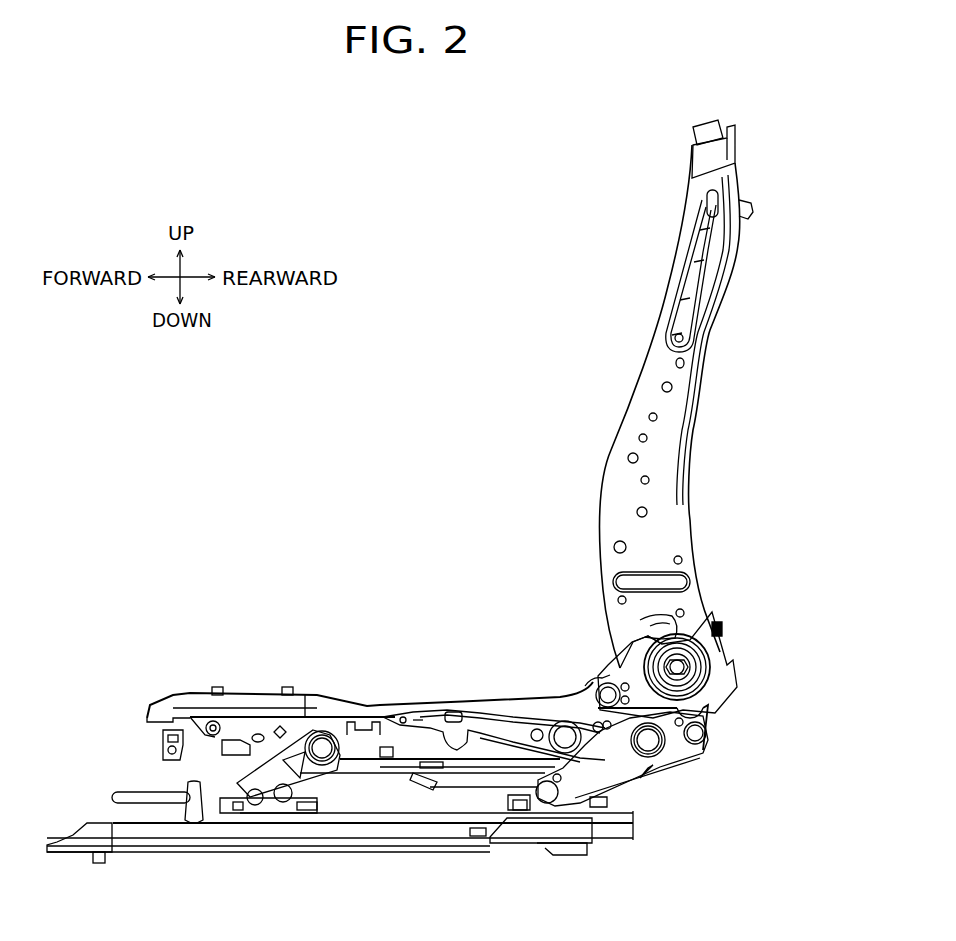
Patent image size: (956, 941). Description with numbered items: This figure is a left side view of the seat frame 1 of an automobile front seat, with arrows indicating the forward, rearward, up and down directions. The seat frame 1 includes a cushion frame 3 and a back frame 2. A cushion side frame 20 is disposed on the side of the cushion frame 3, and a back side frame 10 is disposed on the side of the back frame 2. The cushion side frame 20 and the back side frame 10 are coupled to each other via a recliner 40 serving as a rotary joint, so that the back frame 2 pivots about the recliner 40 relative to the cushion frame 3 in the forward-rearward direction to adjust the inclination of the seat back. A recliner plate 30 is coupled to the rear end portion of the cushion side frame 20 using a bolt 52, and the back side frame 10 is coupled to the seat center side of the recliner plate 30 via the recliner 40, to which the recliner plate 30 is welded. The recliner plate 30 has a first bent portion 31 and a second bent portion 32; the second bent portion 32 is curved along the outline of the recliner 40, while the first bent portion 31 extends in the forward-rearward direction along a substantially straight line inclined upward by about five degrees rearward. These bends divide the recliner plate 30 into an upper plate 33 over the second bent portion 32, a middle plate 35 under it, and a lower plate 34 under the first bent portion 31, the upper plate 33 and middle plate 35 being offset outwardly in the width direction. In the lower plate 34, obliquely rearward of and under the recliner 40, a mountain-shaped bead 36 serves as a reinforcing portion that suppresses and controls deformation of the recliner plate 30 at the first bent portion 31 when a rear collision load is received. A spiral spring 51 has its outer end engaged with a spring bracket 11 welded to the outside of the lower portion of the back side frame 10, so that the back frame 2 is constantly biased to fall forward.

The seat frame 1 is at (440, 575).
The back frame 2 is at (612, 418).
The cushion frame 3 is at (355, 690).
The back side frame 10 is at (606, 494).
The spring bracket 11 is at (655, 617).
The cushion side frame 20 is at (460, 703).
The recliner plate 30 is at (730, 678).
The first bent portion 31 is at (712, 702).
The second bent portion 32 is at (617, 677).
The upper plate 33 is at (723, 665).
The lower plate 34 is at (712, 725).
The middle plate 35 is at (613, 682).
The bead 36 is at (712, 713).
The recliner 40 is at (732, 668).
The spiral spring 51 is at (710, 653).
The bolt 52 is at (596, 688).